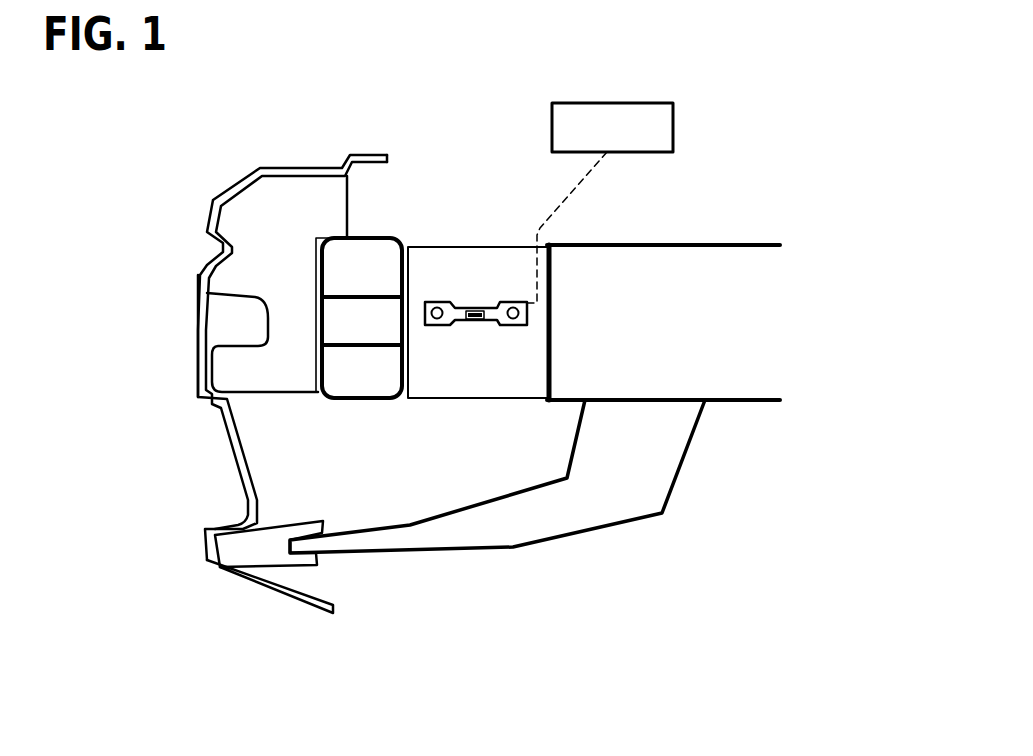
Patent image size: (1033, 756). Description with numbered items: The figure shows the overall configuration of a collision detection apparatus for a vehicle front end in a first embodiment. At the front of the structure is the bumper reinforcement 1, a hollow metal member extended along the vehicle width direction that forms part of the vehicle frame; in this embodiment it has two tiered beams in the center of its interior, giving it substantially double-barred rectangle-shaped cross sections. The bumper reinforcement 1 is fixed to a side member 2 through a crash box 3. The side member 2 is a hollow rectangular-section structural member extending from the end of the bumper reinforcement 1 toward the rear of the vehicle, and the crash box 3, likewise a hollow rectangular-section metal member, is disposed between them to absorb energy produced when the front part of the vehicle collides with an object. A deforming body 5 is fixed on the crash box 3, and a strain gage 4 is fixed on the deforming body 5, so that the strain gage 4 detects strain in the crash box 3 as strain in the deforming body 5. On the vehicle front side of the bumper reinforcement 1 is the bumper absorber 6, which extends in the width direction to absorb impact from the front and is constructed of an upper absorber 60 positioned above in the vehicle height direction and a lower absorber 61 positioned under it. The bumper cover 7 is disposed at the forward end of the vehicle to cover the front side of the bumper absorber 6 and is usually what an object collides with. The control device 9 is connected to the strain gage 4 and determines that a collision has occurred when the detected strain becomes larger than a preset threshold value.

The bumper reinforcement 1 is at (376, 258).
The side member 2 is at (625, 258).
The crash box 3 is at (503, 258).
The strain gage 4 is at (475, 322).
The deforming body 5 is at (447, 302).
The bumper absorber 6 is at (292, 367).
The upper absorber 60 is at (277, 202).
The lower absorber 61 is at (252, 548).
The bumper cover 7 is at (198, 331).
The control device 9 is at (648, 103).